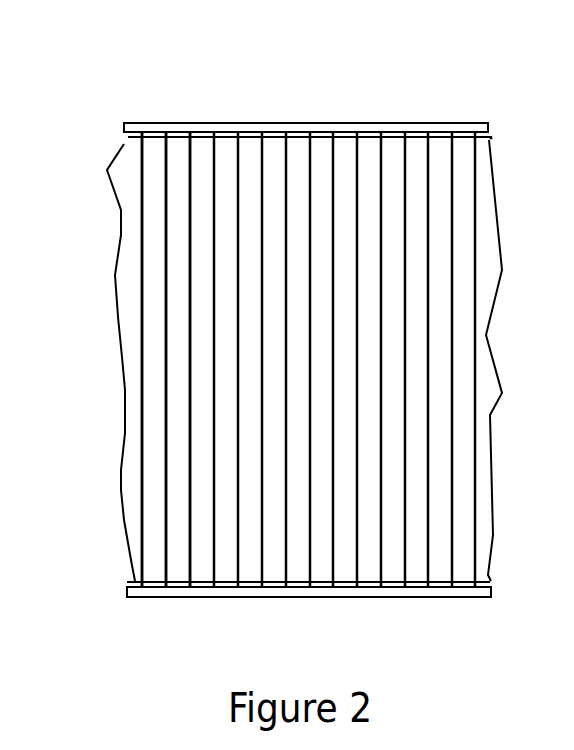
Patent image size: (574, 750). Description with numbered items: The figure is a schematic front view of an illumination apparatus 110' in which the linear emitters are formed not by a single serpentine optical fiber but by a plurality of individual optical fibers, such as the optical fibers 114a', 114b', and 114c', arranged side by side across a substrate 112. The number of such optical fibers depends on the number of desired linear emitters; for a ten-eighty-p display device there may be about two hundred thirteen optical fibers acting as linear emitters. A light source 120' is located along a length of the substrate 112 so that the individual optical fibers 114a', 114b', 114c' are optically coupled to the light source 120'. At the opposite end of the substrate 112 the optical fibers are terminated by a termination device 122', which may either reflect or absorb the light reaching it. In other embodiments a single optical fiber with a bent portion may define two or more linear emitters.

The modular grid assembly 110' is at (277, 314).
The substrate 112 is at (130, 212).
The optical fiber 114a' is at (78, 359).
The optical fiber 114b' is at (104, 359).
The optical fiber 114c' is at (126, 359).
The termination device 122' is at (308, 97).
The light source 120' is at (292, 627).